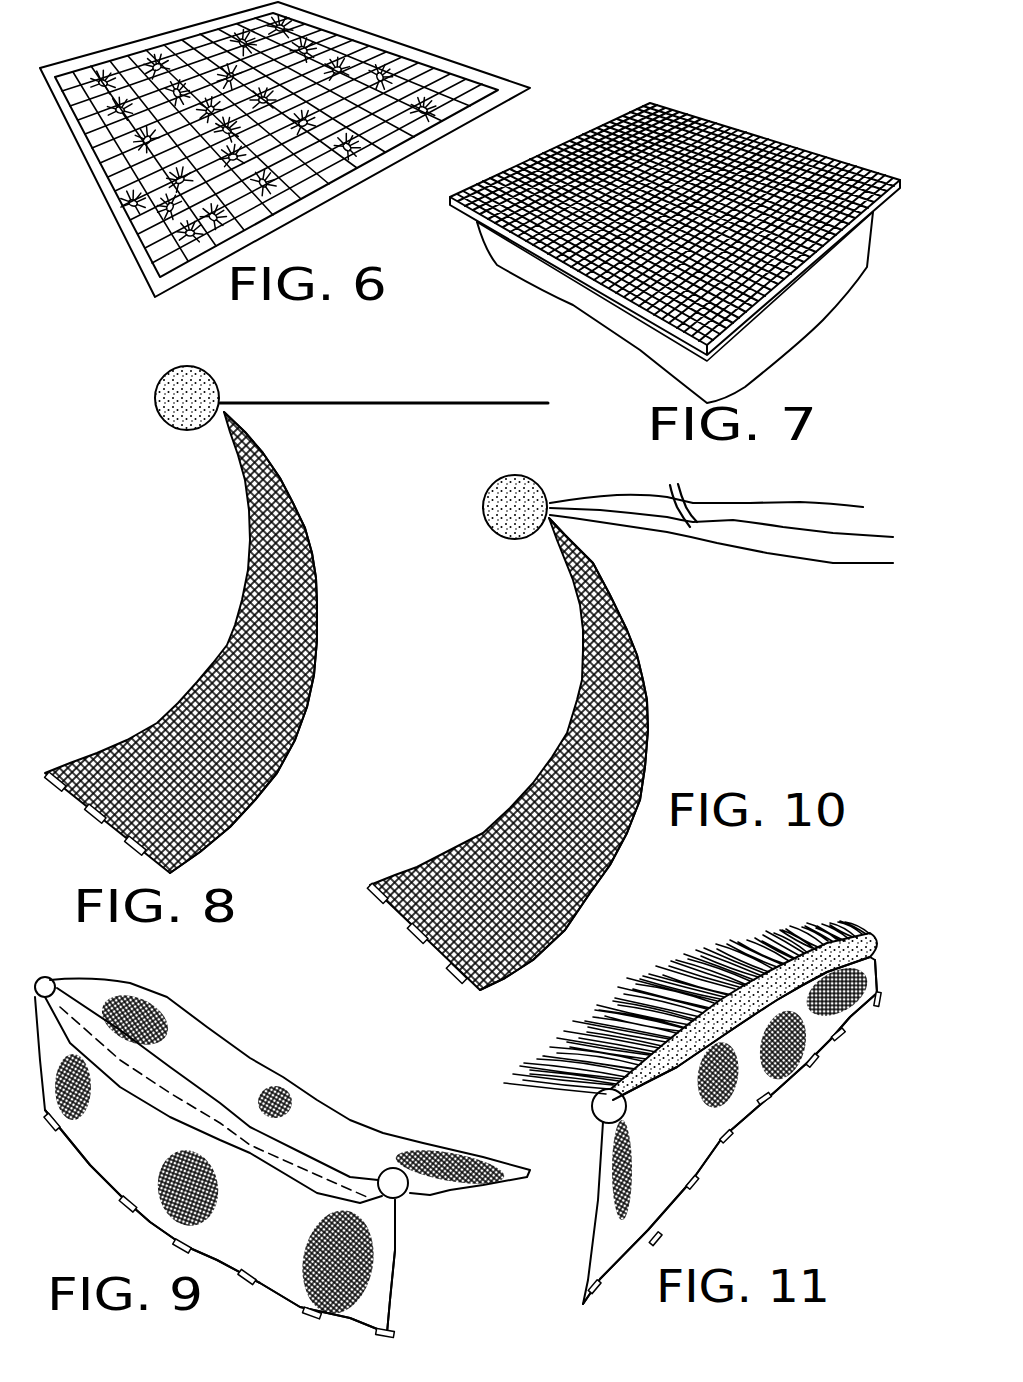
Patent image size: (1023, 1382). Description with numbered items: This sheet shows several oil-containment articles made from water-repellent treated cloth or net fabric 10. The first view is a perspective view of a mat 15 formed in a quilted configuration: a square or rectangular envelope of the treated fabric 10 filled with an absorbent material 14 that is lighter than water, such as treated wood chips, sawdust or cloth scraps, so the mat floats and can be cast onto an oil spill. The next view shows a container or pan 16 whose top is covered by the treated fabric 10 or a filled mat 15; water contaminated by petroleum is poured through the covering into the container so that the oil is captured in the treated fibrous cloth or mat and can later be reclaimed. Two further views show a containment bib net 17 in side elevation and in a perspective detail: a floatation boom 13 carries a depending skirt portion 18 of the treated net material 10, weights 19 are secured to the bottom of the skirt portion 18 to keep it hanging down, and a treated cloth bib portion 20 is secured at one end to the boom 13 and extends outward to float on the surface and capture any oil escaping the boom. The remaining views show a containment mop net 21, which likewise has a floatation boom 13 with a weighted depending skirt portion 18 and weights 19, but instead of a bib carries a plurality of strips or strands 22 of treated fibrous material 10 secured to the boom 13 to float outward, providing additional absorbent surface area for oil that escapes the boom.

In FIG. 6, the treated cloth or net fabric 10 is at (140, 220).
In FIG. 7, the treated cloth or net fabric 10 is at (587, 130).
In FIG. 8, the treated cloth or net fabric 10 is at (350, 400).
In FIG. 10, the treated cloth or net fabric 10 is at (630, 680).
In FIG. 9, the treated cloth or net fabric 10 is at (172, 1208).
In FIG. 11, the treated cloth or net fabric 10 is at (793, 1067).
In FIG. 8, the floatation boom 13 is at (170, 367).
In FIG. 10, the floatation boom 13 is at (510, 473).
In FIG. 9, the floatation boom 13 is at (308, 1153).
In FIG. 11, the floatation boom 13 is at (867, 947).
In FIG. 6, the absorbent material 14 is at (393, 57).
In FIG. 6, the mat 15 is at (118, 33).
In FIG. 7, the mat 15 is at (760, 177).
In FIG. 7, the container or pan 16 is at (593, 307).
In FIG. 8, the containment bib net 17 is at (197, 578).
In FIG. 9, the containment bib net 17 is at (220, 1032).
In FIG. 8, the skirt portion 18 is at (307, 547).
In FIG. 10, the skirt portion 18 is at (617, 772).
In FIG. 9, the skirt portion 18 is at (287, 1237).
In FIG. 11, the skirt portion 18 is at (684, 1160).
In FIG. 8, the weights 19 is at (107, 837).
In FIG. 10, the weights 19 is at (448, 967).
In FIG. 9, the weights 19 is at (120, 1198).
In FIG. 11, the weights 19 is at (719, 1141).
In FIG. 8, the bib portion 20 is at (253, 402).
In FIG. 9, the bib portion 20 is at (230, 1091).
In FIG. 10, the containment mop net 21 is at (547, 698).
In FIG. 11, the containment mop net 21 is at (581, 1245).
In FIG. 10, the strips or strands 22 is at (677, 507).
In FIG. 11, the strips or strands 22 is at (630, 1010).